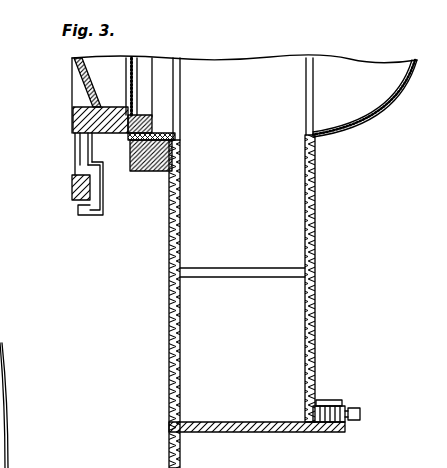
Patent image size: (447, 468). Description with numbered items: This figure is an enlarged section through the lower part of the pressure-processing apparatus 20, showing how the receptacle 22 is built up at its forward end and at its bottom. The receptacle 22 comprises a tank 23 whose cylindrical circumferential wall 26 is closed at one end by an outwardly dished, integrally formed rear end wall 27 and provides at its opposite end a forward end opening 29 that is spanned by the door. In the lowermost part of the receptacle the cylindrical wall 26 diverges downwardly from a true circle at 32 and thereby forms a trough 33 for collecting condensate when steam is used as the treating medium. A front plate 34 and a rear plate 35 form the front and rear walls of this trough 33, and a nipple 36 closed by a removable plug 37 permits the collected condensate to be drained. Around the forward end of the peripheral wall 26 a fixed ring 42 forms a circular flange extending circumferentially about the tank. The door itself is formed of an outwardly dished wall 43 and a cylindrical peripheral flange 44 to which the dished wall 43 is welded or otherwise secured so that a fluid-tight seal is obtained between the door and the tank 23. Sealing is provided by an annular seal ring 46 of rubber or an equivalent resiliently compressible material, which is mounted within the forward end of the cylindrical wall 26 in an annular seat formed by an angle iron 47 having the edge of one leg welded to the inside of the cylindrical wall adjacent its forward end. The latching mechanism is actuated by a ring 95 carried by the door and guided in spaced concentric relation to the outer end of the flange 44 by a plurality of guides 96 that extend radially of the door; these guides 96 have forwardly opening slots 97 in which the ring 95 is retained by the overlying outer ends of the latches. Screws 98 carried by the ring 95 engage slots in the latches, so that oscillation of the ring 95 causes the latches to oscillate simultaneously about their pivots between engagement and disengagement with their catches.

The pressure-processing apparatus 20 is at (142, 309).
The receptacle 22 is at (412, 74).
The tank 23 is at (376, 124).
The cylindrical circumferential wall 26 is at (330, 140).
The rear end wall 27 is at (390, 103).
The forward end opening 29 is at (128, 122).
The divergence of the cylindrical wall 32 is at (238, 434).
The trough 33 is at (281, 387).
The front plate 34 is at (170, 365).
The rear plate 35 is at (314, 322).
The nipple 36 is at (330, 403).
The removable plug 37 is at (362, 413).
The fixed ring 42 is at (153, 172).
The outwardly dished wall 43 is at (84, 80).
The cylindrical peripheral flange 44 is at (75, 122).
The annular seal ring 46 is at (140, 117).
The angle iron 47 is at (178, 62).
The ring 95 is at (74, 191).
The guides 96 is at (92, 215).
The forwardly opening slots 97 is at (72, 190).
The screws 98 is at (100, 202).